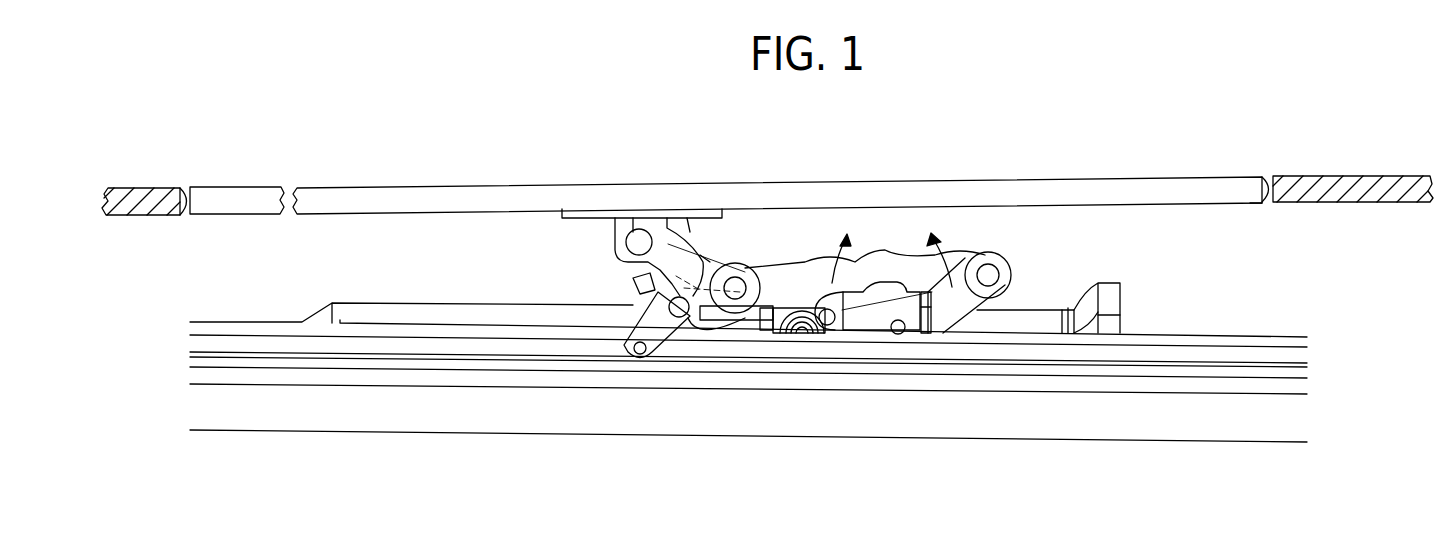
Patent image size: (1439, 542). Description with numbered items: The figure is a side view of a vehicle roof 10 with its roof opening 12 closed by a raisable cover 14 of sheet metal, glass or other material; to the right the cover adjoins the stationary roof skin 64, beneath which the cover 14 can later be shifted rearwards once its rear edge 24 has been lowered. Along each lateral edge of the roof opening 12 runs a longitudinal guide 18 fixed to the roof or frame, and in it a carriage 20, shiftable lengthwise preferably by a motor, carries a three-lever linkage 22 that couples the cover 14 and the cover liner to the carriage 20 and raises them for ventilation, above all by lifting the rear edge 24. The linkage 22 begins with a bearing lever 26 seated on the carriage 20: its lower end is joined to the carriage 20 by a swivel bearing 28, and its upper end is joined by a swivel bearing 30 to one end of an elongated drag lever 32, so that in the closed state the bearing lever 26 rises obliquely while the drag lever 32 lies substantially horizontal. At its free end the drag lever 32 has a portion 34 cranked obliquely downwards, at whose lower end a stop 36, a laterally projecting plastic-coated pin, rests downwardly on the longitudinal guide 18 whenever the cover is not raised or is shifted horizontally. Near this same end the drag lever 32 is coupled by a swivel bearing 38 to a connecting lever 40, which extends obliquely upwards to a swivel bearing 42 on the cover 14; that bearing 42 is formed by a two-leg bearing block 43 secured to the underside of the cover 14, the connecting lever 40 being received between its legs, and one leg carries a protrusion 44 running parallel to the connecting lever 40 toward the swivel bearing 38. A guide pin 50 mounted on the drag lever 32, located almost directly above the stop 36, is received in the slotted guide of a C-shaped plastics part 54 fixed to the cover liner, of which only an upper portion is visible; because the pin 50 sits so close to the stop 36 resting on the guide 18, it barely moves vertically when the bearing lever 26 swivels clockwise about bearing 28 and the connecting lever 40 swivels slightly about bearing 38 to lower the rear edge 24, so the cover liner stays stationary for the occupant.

The vehicle roof 10 is at (1305, 170).
The roof opening 12 is at (1262, 180).
The cover 14 is at (992, 188).
The longitudinal guide 18 is at (363, 343).
The carriage 20 is at (1114, 290).
The linkage 22 is at (818, 246).
The rear edge 24 is at (1252, 203).
The bearing lever 26 is at (960, 332).
The swivel bearing 28 is at (926, 335).
The swivel bearing 30 is at (990, 276).
The drag lever 32 is at (890, 262).
The portion 34 is at (648, 322).
The stop 36 is at (633, 354).
The swivel bearing 38 is at (745, 270).
The connecting lever 40 is at (707, 257).
The swivel bearing 42 is at (638, 230).
The bearing block 43 is at (586, 209).
The protrusion 44 is at (678, 248).
The guide pin 50 is at (690, 330).
The plastics part 54 is at (655, 278).
The stationary roof skin 64 is at (1377, 186).